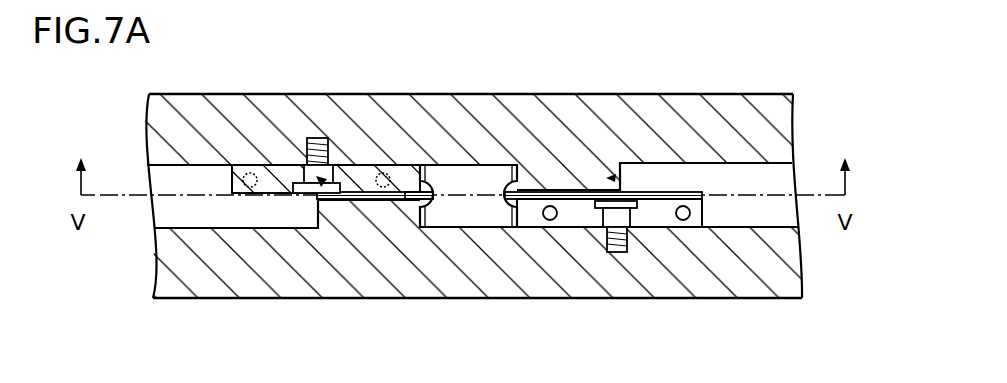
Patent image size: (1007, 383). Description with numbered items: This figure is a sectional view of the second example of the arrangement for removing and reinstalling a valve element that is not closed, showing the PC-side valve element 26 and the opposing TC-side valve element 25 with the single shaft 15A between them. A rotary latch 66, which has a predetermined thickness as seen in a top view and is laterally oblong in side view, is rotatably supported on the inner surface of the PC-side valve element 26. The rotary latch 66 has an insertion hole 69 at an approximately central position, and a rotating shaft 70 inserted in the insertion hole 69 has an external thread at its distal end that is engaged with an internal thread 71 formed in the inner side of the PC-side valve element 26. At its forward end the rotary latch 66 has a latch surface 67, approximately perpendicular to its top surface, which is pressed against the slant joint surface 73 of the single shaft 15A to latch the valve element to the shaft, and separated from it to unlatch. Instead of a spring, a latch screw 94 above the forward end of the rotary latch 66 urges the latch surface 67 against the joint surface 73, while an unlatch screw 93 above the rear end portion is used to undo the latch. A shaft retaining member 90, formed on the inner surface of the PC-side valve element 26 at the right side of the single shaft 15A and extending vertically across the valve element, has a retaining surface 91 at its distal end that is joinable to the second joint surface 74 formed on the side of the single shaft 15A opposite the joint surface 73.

The PC-side valve element 26 is at (710, 113).
The TC-side valve element 25 is at (682, 287).
The rotary latch 66 is at (360, 167).
The insertion hole 69 is at (314, 178).
The internal thread 71 is at (327, 188).
The rotating shaft 70 is at (330, 192).
The joint surface 73 is at (416, 194).
The unlatch screw 93 is at (250, 188).
The latch screw 94 is at (383, 188).
The single shaft 15A is at (472, 193).
The latch surface 67 is at (427, 183).
The retaining surface 91 is at (486, 182).
The second joint surface 74 is at (515, 183).
The shaft retaining member 90 is at (608, 178).